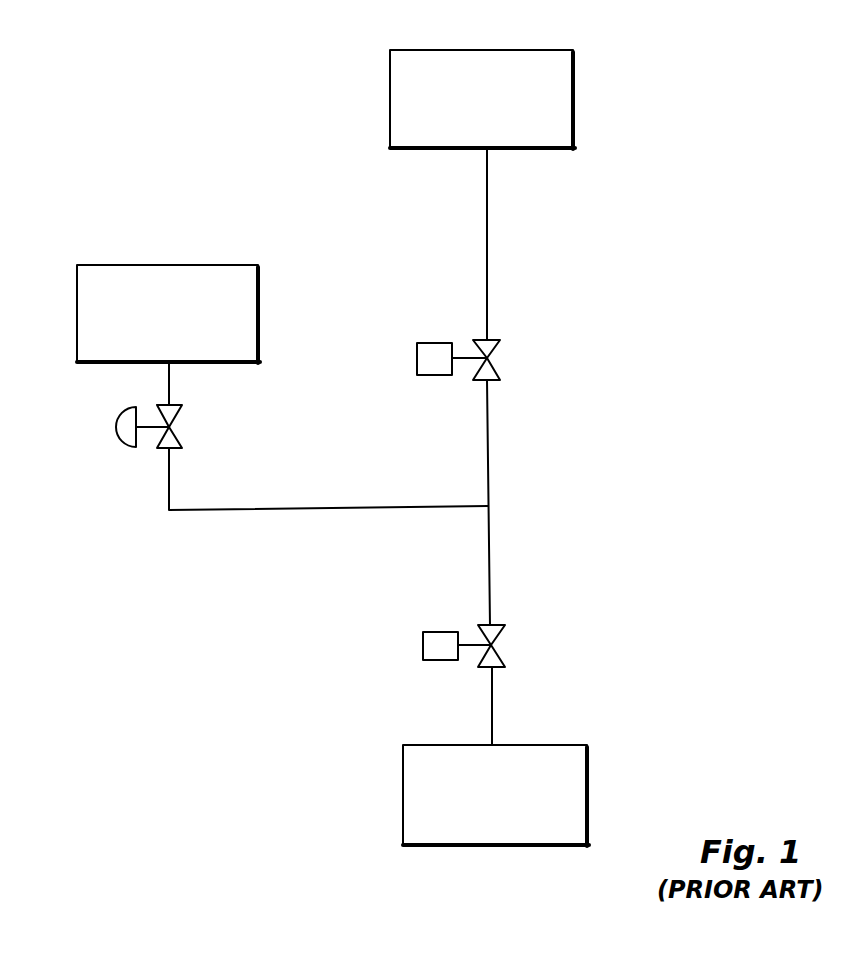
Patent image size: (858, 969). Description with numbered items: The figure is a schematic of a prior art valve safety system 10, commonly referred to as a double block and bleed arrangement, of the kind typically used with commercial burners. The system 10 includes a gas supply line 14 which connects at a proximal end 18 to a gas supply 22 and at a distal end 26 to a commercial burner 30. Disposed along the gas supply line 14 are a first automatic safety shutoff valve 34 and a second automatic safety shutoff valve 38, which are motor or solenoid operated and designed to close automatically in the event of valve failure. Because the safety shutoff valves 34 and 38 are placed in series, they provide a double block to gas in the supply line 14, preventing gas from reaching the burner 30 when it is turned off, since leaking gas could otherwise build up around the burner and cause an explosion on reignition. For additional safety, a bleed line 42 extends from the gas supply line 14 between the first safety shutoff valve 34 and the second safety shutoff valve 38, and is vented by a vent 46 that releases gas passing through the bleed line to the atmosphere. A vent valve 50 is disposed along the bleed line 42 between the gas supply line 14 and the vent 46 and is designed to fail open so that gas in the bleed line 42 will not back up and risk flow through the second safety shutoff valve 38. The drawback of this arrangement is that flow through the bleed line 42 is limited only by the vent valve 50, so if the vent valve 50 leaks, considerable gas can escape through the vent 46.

The valve safety system 10 is at (643, 270).
The gas supply line 14 is at (487, 266).
The proximal end 18 is at (492, 710).
The gas supply 22 is at (574, 760).
The distal end 26 is at (488, 164).
The commercial burner 30 is at (576, 72).
The first automatic safety shutoff valve 34 is at (494, 626).
The second automatic safety shutoff valve 38 is at (488, 340).
The bleed line 42 is at (305, 508).
The vent 46 is at (260, 298).
The vent valve 50 is at (176, 406).